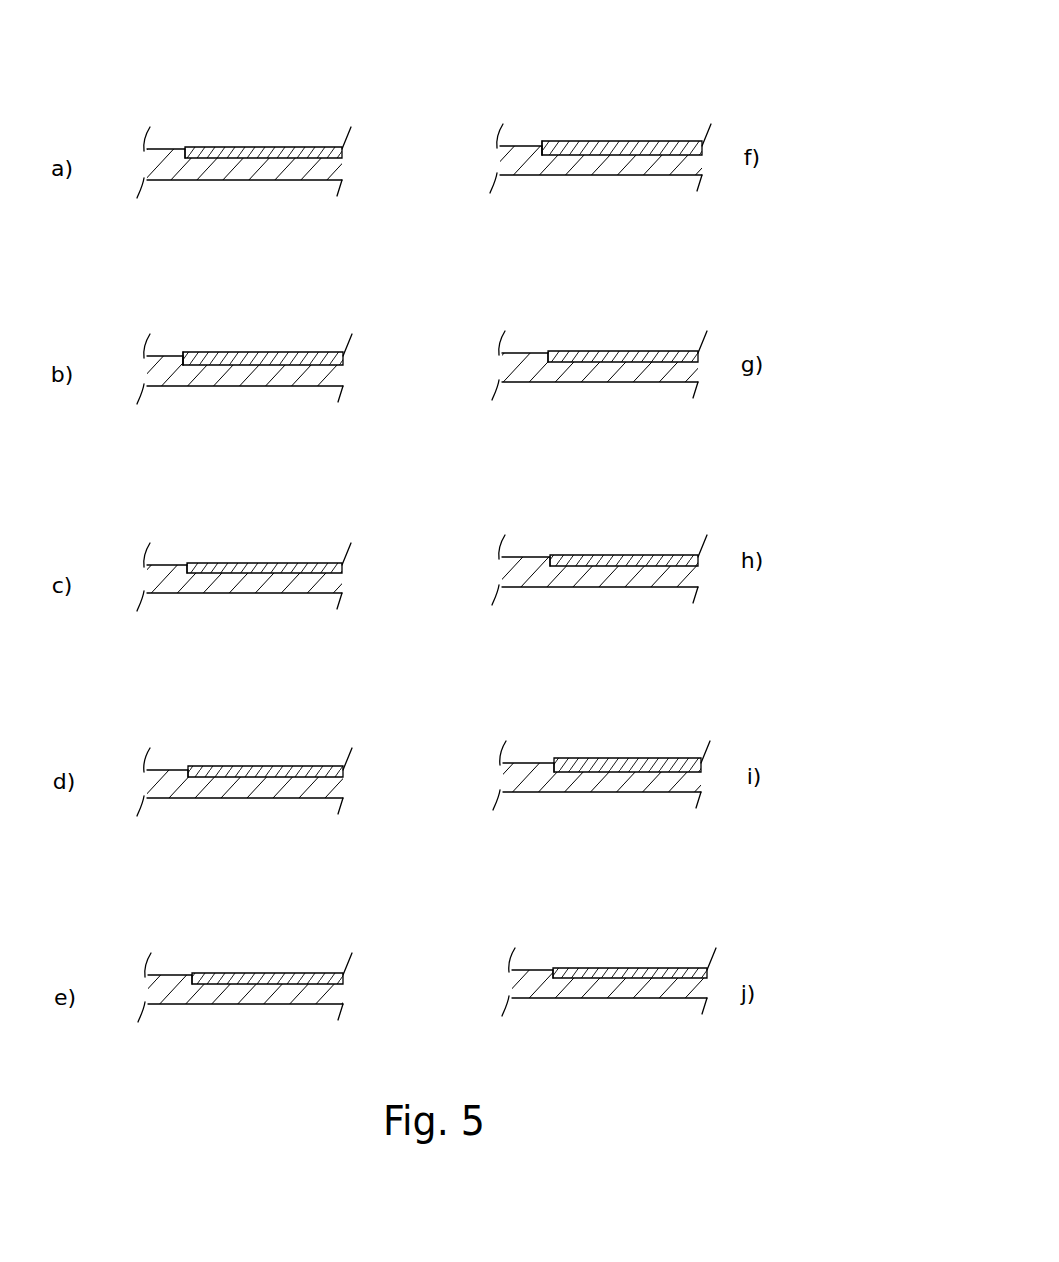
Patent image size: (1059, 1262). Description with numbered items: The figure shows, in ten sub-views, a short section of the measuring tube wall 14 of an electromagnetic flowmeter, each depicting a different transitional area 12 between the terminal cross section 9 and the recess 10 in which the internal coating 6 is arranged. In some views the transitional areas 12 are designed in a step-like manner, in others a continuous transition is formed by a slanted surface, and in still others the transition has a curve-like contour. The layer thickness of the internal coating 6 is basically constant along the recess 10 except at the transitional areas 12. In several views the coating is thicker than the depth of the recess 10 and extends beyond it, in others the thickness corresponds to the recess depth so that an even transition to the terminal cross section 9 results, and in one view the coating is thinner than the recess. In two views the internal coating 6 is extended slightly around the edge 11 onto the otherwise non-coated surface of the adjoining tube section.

The internal coating 6 is at (235, 153).
The terminal cross section 9 is at (167, 143).
The recess 10 is at (308, 159).
The edge 11 is at (185, 350).
The transitional area 12 is at (183, 158).
The measuring tube wall 14 is at (166, 166).